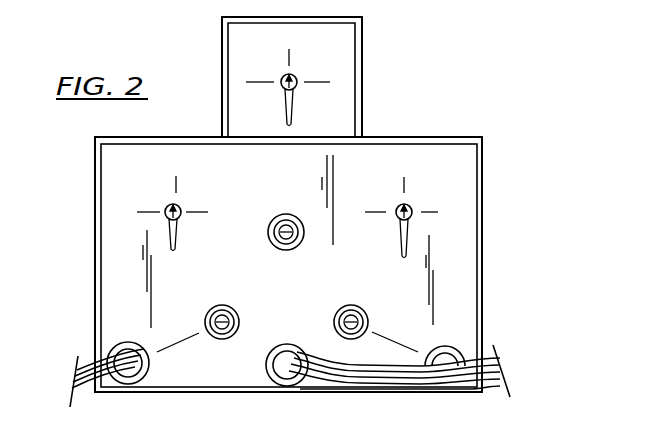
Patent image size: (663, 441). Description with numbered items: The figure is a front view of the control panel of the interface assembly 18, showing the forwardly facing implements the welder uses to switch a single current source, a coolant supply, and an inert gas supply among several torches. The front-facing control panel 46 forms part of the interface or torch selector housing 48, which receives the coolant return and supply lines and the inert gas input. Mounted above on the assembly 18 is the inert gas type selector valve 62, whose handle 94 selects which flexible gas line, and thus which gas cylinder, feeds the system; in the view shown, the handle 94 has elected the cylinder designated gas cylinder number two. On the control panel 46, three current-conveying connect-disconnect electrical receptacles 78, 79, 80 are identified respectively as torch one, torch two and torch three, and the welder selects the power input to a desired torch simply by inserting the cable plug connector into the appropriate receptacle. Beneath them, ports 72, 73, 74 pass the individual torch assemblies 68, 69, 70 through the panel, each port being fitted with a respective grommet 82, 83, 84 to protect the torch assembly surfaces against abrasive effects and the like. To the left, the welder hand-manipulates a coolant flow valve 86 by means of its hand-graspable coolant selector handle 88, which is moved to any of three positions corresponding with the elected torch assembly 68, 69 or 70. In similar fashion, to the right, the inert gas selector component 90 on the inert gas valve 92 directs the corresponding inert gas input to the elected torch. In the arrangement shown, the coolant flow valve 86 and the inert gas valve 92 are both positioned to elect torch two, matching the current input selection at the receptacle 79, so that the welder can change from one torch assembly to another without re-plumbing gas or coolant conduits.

The interface assembly 18 is at (493, 98).
The control panel 46 is at (463, 273).
The torch selector housing 48 is at (482, 197).
The inert gas type selector valve 62 is at (296, 76).
The handle 94 is at (292, 110).
The coolant flow valve 86 is at (182, 206).
The coolant selector handle 88 is at (178, 232).
The inert gas valve 92 is at (397, 205).
The inert gas selector component 90 is at (400, 236).
The electrical receptacle 79 is at (279, 216).
The electrical receptacle 78 is at (238, 312).
The electrical receptacle 80 is at (367, 311).
The port 72 is at (148, 346).
The grommet 82 is at (150, 370).
The torch assembly 68 is at (78, 368).
The port 73 is at (297, 353).
The grommet 83 is at (272, 358).
The port 74 is at (440, 345).
The grommet 84 is at (433, 350).
The torch assembly 69 is at (374, 372).
The torch assembly 70 is at (497, 356).